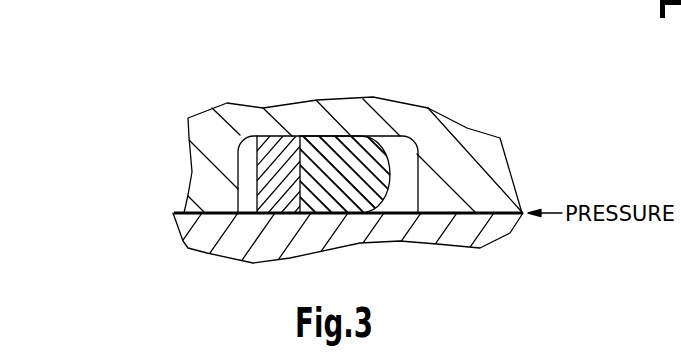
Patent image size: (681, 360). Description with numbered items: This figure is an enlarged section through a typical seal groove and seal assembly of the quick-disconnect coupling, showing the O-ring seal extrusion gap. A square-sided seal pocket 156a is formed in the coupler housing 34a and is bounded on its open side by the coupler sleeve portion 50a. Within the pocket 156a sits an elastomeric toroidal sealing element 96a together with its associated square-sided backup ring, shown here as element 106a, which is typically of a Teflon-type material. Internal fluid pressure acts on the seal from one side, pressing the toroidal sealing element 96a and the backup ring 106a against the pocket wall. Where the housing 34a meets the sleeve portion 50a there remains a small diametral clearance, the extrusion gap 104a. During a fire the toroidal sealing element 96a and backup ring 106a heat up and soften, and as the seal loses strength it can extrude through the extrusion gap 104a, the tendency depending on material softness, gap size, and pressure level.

The coupler housing 34a is at (477, 183).
The seal pocket 156a is at (410, 136).
The seal backing portion 106a is at (272, 170).
The toroidal sealing element 96a is at (346, 166).
The extrusion gap 104a is at (171, 213).
The coupler sleeve portion 50a is at (427, 230).